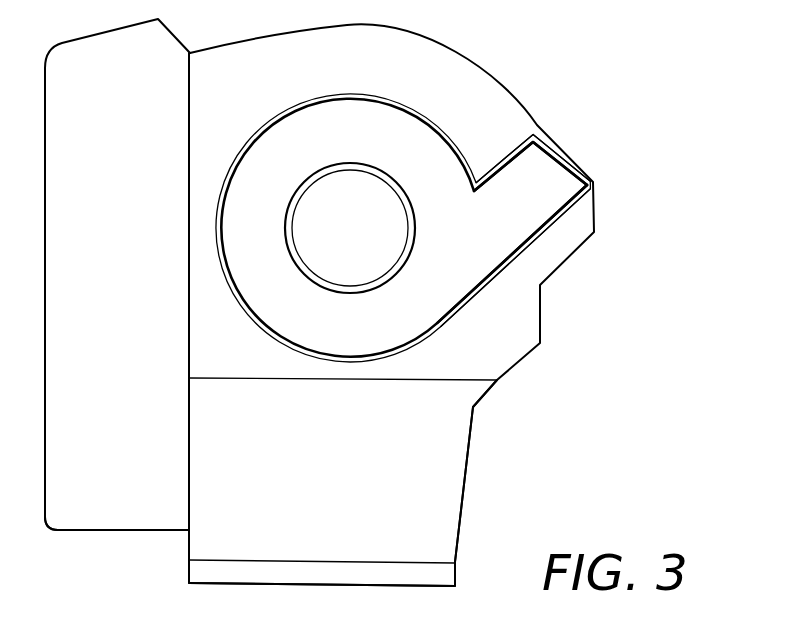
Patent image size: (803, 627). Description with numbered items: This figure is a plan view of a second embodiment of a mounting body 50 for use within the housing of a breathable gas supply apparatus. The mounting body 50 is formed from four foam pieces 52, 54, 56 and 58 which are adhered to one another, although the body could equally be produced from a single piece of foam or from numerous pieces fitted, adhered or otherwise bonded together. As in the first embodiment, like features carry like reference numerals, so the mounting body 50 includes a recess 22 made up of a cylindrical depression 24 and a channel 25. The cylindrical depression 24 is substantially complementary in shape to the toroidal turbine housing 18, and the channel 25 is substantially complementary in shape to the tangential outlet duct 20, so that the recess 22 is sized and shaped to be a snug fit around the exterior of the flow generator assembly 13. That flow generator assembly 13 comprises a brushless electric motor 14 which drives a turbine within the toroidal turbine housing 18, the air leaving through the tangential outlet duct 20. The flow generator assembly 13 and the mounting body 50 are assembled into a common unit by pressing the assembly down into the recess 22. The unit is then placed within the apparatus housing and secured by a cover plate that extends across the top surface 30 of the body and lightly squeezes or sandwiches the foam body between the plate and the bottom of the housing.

The flow generator assembly 13 is at (428, 182).
The brushless electric motor 14 is at (322, 255).
The toroidal turbine housing 18 is at (272, 157).
The tangential outlet duct 20 is at (538, 182).
The recess 22 is at (440, 336).
The cylindrical depression 24 is at (328, 360).
The channel 25 is at (557, 219).
The top surface 30 is at (126, 314).
The mounting body 50 is at (635, 410).
The foam piece 52 is at (442, 87).
The foam piece 54 is at (100, 508).
The foam piece 56 is at (443, 495).
The foam piece 58 is at (203, 571).